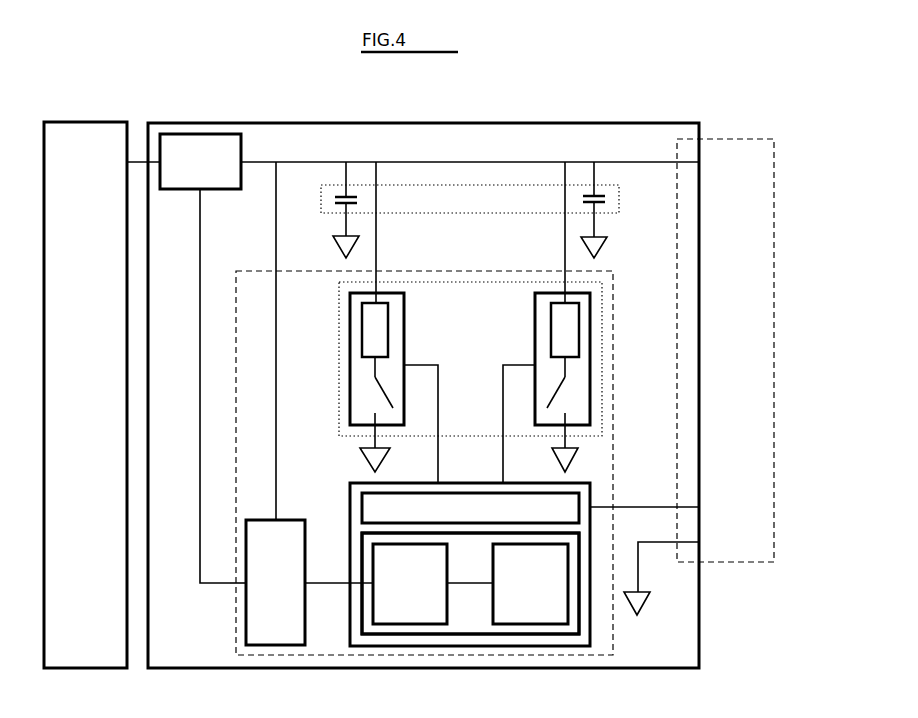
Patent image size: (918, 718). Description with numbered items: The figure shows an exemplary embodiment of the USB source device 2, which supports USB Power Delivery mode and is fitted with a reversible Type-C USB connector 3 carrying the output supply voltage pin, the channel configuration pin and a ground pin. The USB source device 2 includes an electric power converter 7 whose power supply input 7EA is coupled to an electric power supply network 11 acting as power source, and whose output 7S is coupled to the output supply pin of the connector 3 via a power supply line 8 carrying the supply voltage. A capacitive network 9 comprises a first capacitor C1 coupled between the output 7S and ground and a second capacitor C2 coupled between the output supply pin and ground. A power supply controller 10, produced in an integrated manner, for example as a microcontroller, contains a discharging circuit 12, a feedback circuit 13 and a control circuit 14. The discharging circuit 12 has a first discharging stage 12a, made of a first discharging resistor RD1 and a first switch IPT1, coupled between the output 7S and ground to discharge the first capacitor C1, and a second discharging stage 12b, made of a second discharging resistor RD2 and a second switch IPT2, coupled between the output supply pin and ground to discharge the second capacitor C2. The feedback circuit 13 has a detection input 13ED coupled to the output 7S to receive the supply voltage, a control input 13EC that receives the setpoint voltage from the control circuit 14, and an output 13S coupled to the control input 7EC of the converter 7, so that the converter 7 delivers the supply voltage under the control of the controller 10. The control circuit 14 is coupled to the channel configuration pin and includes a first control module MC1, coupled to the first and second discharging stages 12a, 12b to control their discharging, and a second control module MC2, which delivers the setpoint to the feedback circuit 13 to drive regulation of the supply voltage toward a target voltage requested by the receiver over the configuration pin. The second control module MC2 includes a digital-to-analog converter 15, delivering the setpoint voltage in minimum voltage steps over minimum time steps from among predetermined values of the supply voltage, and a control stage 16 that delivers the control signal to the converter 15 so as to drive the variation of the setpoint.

The USB source device 2 is at (427, 121).
The reversible USB connector 3 is at (748, 137).
The electric power converter 7 is at (200, 132).
The power supply input 7EA is at (157, 160).
The output 7S is at (244, 160).
The control input 7EC is at (206, 192).
The power supply line 8 is at (293, 160).
The capacitive network 9 is at (477, 216).
The power supply controller 10 is at (616, 458).
The electric power supply network 11 is at (85, 120).
The discharging circuit 12 is at (348, 378).
The first discharging stage 12a is at (406, 344).
The second discharging stage 12b is at (533, 322).
The feedback circuit 13 is at (244, 633).
The output 13S is at (245, 586).
The detection input 13ED is at (279, 518).
The control input 13EC is at (308, 587).
The control circuit 14 is at (463, 649).
The digital-to-analog converter 15 is at (412, 626).
The control stage 16 is at (571, 612).
The first capacitor C1 is at (332, 195).
The second capacitor C2 is at (610, 196).
The first discharging resistor RD1 is at (360, 330).
The second discharging resistor RD2 is at (581, 332).
The first switch IPT1 is at (364, 400).
The second switch IPT2 is at (575, 400).
The first control module MC1 is at (472, 481).
The second control module MC2 is at (525, 637).